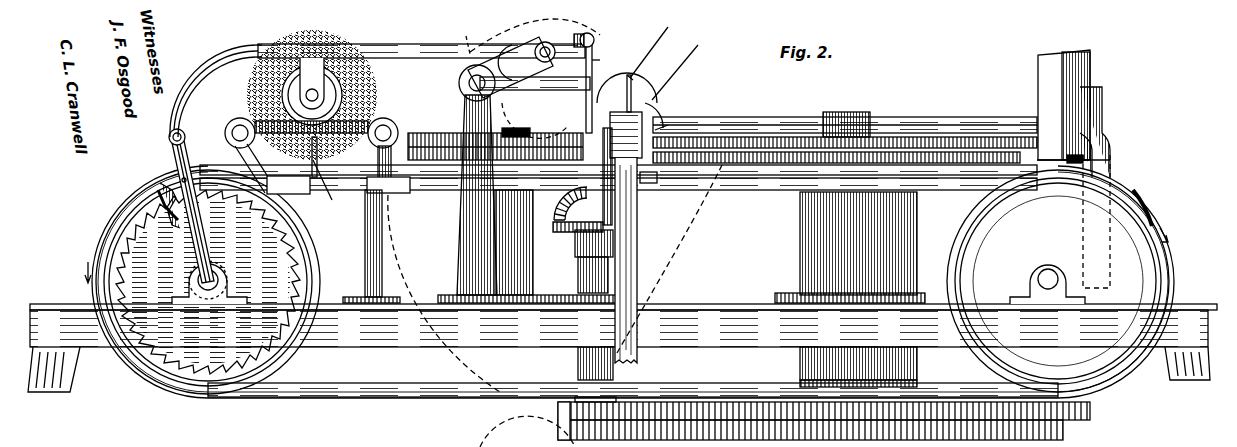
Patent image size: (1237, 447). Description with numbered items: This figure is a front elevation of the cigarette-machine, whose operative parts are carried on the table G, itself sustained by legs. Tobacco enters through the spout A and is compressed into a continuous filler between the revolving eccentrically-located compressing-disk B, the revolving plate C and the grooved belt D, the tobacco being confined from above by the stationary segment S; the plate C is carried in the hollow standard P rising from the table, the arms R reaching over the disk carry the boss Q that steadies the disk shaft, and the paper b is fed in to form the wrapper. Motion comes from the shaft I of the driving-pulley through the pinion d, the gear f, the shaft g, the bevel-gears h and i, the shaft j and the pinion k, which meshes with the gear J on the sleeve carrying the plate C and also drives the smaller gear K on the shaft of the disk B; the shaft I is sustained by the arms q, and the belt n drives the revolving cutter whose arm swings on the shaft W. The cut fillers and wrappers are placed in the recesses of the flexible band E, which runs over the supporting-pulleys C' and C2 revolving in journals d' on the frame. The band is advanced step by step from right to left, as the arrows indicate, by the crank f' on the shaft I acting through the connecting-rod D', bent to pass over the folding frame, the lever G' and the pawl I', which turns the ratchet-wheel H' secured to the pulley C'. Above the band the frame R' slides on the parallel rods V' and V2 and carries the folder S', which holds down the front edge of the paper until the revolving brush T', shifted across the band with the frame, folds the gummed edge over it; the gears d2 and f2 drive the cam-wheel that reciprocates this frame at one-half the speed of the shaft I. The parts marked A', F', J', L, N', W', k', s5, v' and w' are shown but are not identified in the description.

The spout A is at (1076, 105).
The frame plank A' is at (618, 189).
The compressing-disk B is at (915, 152).
The revolving plate C is at (1085, 163).
The supporting-pulley C' is at (215, 282).
The supporting-pulley C2 is at (1058, 273).
The grooved belt D is at (495, 141).
The connection D' is at (216, 84).
The recessed belt E is at (92, 288).
The lever piece F' is at (666, 105).
The table G is at (622, 348).
The lever G' is at (192, 206).
The ratchet-wheel H' is at (208, 282).
The shaft I is at (518, 67).
The pawl I' is at (163, 190).
The gear J is at (833, 410).
The arm J' is at (535, 94).
The gear K is at (1064, 430).
The wheel L is at (527, 431).
The lever N' is at (682, 109).
The hollow standard P is at (528, 199).
The boss Q is at (846, 116).
The arm R is at (845, 111).
The frame R' is at (383, 134).
The stationary segment S is at (845, 122).
The folder S' is at (328, 188).
The revolving brush T' is at (416, 101).
The rod V' is at (249, 145).
The rod V2 is at (398, 124).
The shaft W is at (419, 184).
The bracket W' is at (289, 196).
The paper b is at (652, 297).
The pinion d is at (535, 31).
The journals d' is at (628, 275).
The gear d2 is at (461, 36).
The gear f is at (669, 259).
The crank f' is at (555, 54).
The gear f2 is at (444, 293).
The shaft g is at (560, 226).
The bevel-gear h is at (562, 205).
The bevel-gear i is at (574, 235).
The shaft j is at (578, 362).
The pinion k is at (553, 420).
The bearing block k' is at (627, 149).
The belt n is at (660, 40).
The arms q is at (532, 118).
The plate s5 is at (1104, 132).
The rod v' is at (604, 65).
The rod w' is at (596, 75).